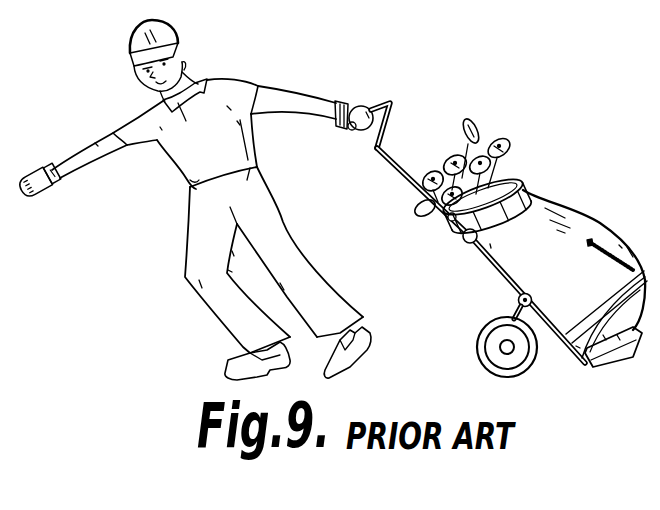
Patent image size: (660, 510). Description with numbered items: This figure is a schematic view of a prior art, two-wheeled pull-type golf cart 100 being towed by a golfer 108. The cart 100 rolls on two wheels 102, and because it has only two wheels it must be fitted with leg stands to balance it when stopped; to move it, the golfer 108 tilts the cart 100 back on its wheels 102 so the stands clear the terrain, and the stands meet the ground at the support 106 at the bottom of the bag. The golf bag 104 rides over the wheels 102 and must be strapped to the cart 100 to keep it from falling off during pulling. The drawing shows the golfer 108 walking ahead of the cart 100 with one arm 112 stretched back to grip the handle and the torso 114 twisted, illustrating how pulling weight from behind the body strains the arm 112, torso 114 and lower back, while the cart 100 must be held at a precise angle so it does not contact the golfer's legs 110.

The cart 100 is at (486, 287).
The wheels 102 is at (477, 345).
The golf bag 104 is at (543, 202).
The bag base support 106 is at (585, 360).
The golfer 108 is at (224, 66).
The legs 110 is at (302, 283).
The arm 112 is at (305, 95).
The torso 114 is at (292, 194).